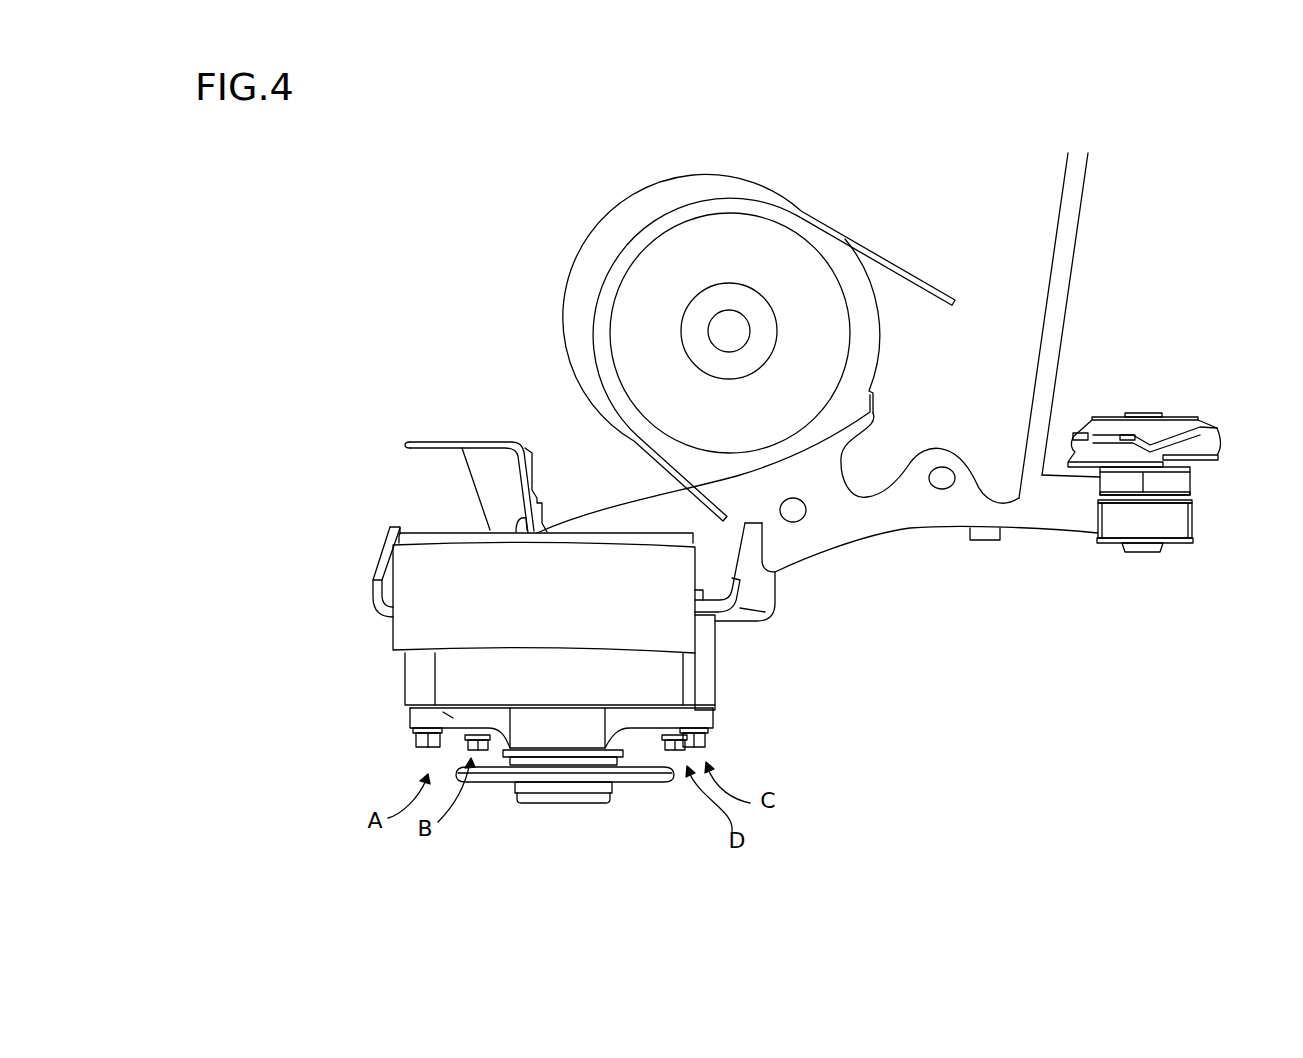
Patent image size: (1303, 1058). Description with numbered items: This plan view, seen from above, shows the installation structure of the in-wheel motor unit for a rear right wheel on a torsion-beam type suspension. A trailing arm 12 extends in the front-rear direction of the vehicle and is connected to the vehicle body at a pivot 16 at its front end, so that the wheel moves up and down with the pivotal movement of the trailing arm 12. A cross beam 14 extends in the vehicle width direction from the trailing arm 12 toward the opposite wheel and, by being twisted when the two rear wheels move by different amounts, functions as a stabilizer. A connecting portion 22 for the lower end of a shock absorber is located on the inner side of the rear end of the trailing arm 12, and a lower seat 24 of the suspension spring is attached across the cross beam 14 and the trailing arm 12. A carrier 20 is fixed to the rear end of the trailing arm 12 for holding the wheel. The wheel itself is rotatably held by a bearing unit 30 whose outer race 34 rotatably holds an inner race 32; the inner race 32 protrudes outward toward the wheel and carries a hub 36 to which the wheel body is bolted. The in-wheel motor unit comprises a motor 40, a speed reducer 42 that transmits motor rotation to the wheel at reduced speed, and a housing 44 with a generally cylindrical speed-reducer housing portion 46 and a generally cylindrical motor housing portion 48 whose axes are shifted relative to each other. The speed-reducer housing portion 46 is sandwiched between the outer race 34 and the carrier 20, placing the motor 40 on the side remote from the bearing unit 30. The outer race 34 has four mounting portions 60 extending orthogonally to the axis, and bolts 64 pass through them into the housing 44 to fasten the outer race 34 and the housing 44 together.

The trailing arm 12 is at (903, 517).
The cross beam 14 is at (1082, 212).
The pivot 16 is at (1177, 413).
The carrier 20 is at (374, 560).
The connecting portion 22 is at (483, 440).
The lower seat 24 is at (690, 192).
The bearing unit 30 is at (577, 789).
The inner race 32 is at (597, 798).
The outer race 34 is at (552, 732).
The hub 36 is at (647, 788).
The motor 40 is at (653, 604).
The speed reducer 42 is at (657, 673).
The housing 44 is at (305, 623).
The speed-reducer housing portion 46 is at (447, 678).
The motor housing portion 48 is at (400, 622).
The mounting portion 60 is at (417, 708).
The bolt 64 is at (413, 740).